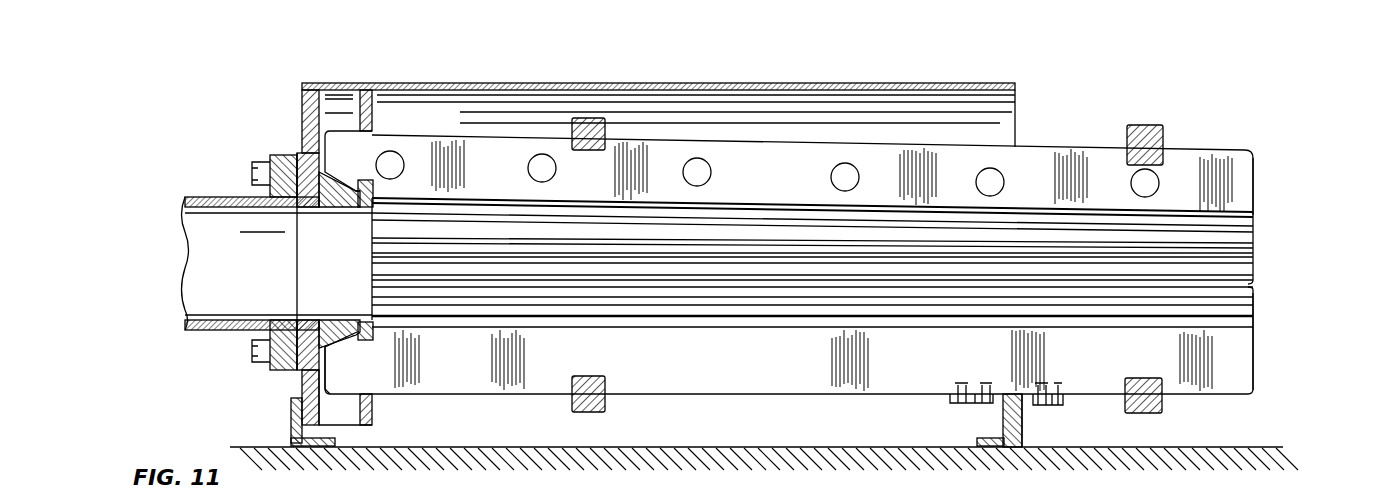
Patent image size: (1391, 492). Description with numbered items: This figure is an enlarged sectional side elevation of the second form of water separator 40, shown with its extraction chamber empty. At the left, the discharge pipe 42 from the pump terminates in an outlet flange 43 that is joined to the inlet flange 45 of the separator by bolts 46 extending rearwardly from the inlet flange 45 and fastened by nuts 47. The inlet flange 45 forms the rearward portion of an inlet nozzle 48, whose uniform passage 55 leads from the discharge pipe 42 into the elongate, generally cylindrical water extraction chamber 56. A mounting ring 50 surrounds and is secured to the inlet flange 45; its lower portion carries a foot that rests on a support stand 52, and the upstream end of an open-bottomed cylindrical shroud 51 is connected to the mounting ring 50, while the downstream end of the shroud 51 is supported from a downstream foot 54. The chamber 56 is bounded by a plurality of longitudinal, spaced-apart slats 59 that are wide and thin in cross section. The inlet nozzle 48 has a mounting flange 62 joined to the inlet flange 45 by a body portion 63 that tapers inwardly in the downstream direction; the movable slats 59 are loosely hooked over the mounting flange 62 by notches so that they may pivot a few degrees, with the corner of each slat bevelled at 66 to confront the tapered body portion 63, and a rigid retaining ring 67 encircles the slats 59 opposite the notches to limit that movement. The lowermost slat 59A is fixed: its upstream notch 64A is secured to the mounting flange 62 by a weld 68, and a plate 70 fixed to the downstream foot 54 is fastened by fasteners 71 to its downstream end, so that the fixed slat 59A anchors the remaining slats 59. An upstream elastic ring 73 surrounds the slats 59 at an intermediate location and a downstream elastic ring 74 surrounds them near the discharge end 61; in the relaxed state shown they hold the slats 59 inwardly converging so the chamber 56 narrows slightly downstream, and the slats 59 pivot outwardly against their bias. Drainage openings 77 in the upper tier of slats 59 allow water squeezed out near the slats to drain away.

The water separator 40 is at (1268, 153).
The discharge pipe 42 is at (218, 197).
The outlet flange 43 is at (300, 155).
The inlet flange 45 is at (305, 153).
The bolts 46 is at (258, 170).
The nuts 47 is at (260, 362).
The inlet nozzle 48 is at (312, 318).
The mounting ring 50 is at (298, 102).
The shroud 51 is at (830, 83).
The support stand 52 is at (553, 447).
The downstream foot 54 is at (1025, 428).
The passage 55 is at (262, 254).
The water extraction chamber 56 is at (445, 248).
The slats 59 is at (1027, 150).
The fixed slat 59A is at (728, 393).
The discharge end 61 is at (1232, 150).
The mounting flange 62 is at (400, 192).
The body portion 63 is at (312, 200).
The notch 64A is at (370, 340).
The bevelled corner 66 is at (355, 172).
The retaining ring 67 is at (372, 110).
The weld 68 is at (375, 337).
The plate 70 is at (952, 400).
The fasteners 71 is at (1067, 390).
The upstream ring 73 is at (590, 118).
The downstream ring 74 is at (1165, 130).
The drainage openings 77 is at (712, 174).